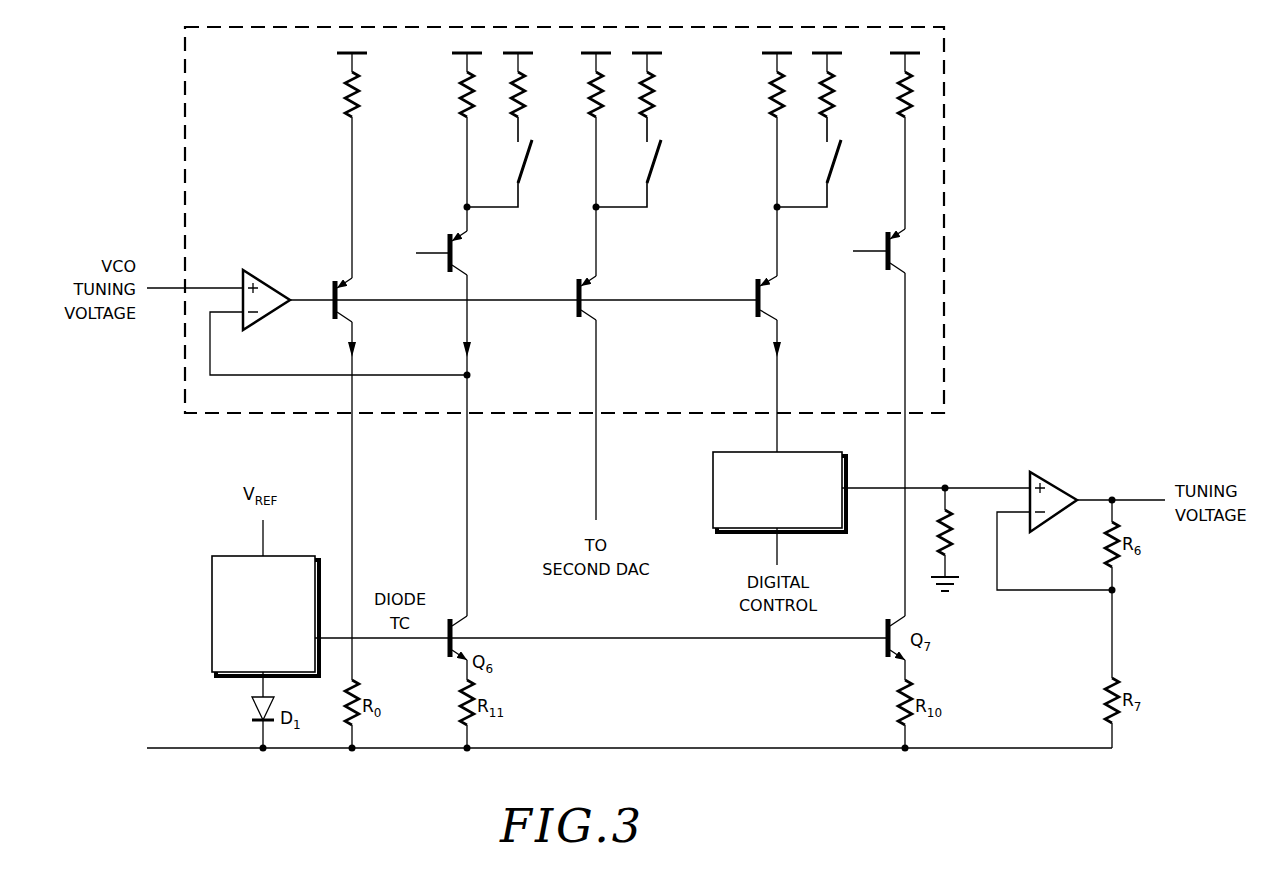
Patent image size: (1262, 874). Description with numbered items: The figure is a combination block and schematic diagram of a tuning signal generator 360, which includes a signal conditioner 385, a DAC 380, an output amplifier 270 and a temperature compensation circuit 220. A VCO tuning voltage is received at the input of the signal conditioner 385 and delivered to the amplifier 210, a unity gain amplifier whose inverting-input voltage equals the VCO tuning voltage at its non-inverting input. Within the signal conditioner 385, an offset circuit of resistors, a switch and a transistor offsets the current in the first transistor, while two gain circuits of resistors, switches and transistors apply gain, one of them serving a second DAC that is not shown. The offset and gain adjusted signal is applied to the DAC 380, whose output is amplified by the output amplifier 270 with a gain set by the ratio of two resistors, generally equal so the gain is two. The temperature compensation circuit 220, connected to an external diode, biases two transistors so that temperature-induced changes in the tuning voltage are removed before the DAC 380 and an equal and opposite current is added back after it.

The signal conditioner 385 is at (254, 94).
The amplifier 210 is at (266, 281).
The temperature compensation circuit 220 is at (302, 661).
The DAC 380 is at (832, 522).
The output amplifier 270 is at (1050, 482).
The tuning signal generator 360 is at (318, 777).